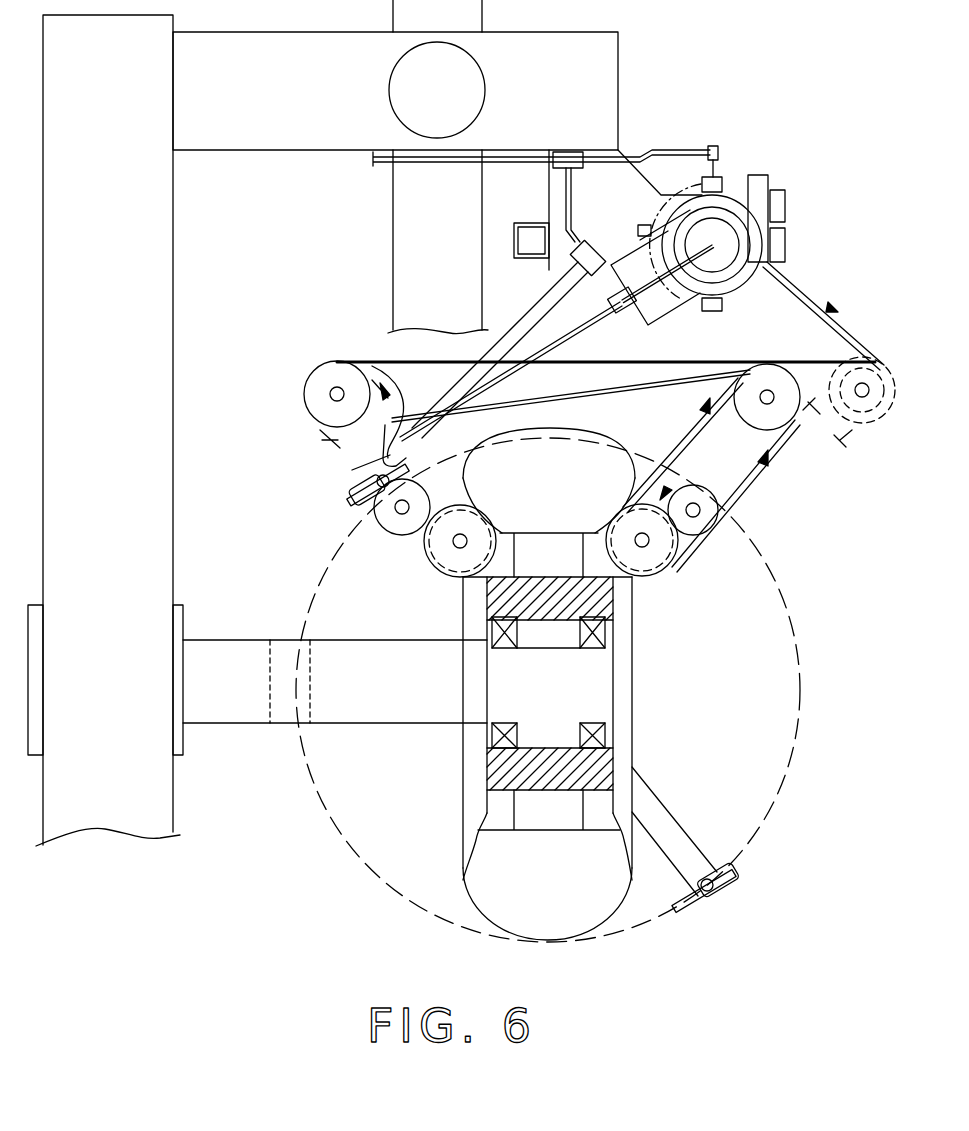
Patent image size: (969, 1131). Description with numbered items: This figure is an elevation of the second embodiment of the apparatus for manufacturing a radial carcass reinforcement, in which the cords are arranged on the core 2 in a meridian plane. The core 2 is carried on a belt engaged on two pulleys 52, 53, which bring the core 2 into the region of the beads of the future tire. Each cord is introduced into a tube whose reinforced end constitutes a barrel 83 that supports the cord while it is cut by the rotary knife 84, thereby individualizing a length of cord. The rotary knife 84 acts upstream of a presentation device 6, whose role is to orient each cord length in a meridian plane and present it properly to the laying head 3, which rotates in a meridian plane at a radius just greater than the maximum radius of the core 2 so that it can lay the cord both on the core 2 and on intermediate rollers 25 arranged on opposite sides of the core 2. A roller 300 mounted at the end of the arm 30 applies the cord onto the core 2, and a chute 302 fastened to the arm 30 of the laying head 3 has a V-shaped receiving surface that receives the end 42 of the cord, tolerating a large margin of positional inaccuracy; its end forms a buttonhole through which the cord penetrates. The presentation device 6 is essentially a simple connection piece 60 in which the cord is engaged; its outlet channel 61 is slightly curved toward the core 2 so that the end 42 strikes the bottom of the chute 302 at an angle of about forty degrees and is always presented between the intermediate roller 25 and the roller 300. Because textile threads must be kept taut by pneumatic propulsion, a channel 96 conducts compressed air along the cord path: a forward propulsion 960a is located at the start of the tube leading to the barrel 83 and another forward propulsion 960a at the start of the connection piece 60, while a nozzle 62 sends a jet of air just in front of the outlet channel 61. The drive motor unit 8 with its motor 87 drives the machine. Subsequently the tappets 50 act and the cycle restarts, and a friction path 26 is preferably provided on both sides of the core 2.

The core 2 is at (567, 498).
The laying head 3 is at (318, 468).
The presentation device 6 is at (462, 340).
The drive motor unit 8 is at (743, 210).
The intermediate rollers 25 is at (380, 525).
The friction path 26 is at (402, 520).
The arm 30 is at (513, 684).
The end of the cord 42 is at (345, 458).
The tappets 50 is at (668, 462).
The pulley 52 is at (322, 388).
The pulley 53 is at (458, 576).
The connection piece 60 is at (584, 352).
The outlet channel 61 is at (387, 430).
The nozzle 62 is at (392, 398).
The barrel 83 is at (672, 300).
The rotary knife 84 is at (712, 312).
The motor 87 is at (712, 243).
The channel 96 is at (665, 152).
The forward propulsion 960a is at (640, 240).
The roller 300 is at (358, 497).
The chute 302 is at (452, 456).